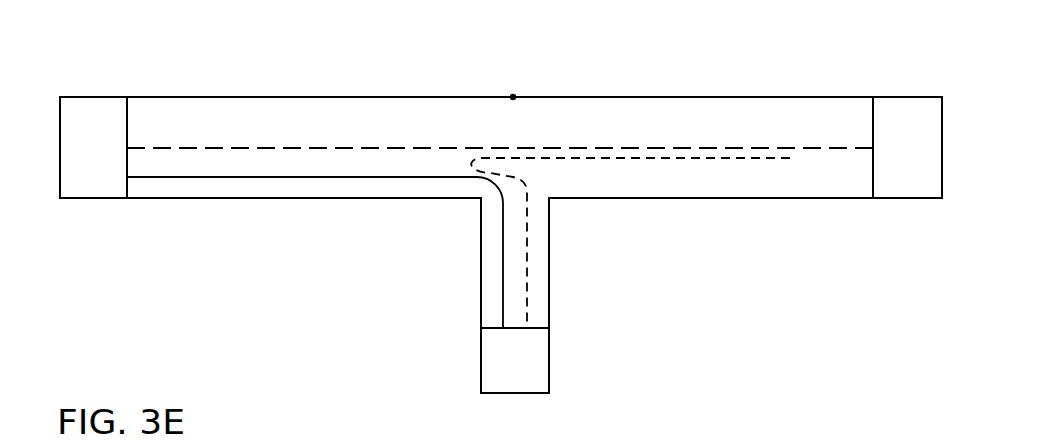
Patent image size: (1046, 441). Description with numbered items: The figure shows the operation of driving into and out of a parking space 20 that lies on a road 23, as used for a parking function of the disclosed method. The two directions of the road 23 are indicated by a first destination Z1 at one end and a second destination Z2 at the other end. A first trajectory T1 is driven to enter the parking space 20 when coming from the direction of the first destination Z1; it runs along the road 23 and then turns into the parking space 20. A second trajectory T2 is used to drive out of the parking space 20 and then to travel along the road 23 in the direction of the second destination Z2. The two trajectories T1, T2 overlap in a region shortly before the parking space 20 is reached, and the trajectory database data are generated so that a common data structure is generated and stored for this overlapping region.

The road 23 is at (513, 97).
The first trajectory T1 is at (296, 187).
The second trajectory T2 is at (649, 170).
The first destination Z1 is at (93, 147).
The second destination Z2 is at (907, 147).
The parking space 20 is at (502, 373).